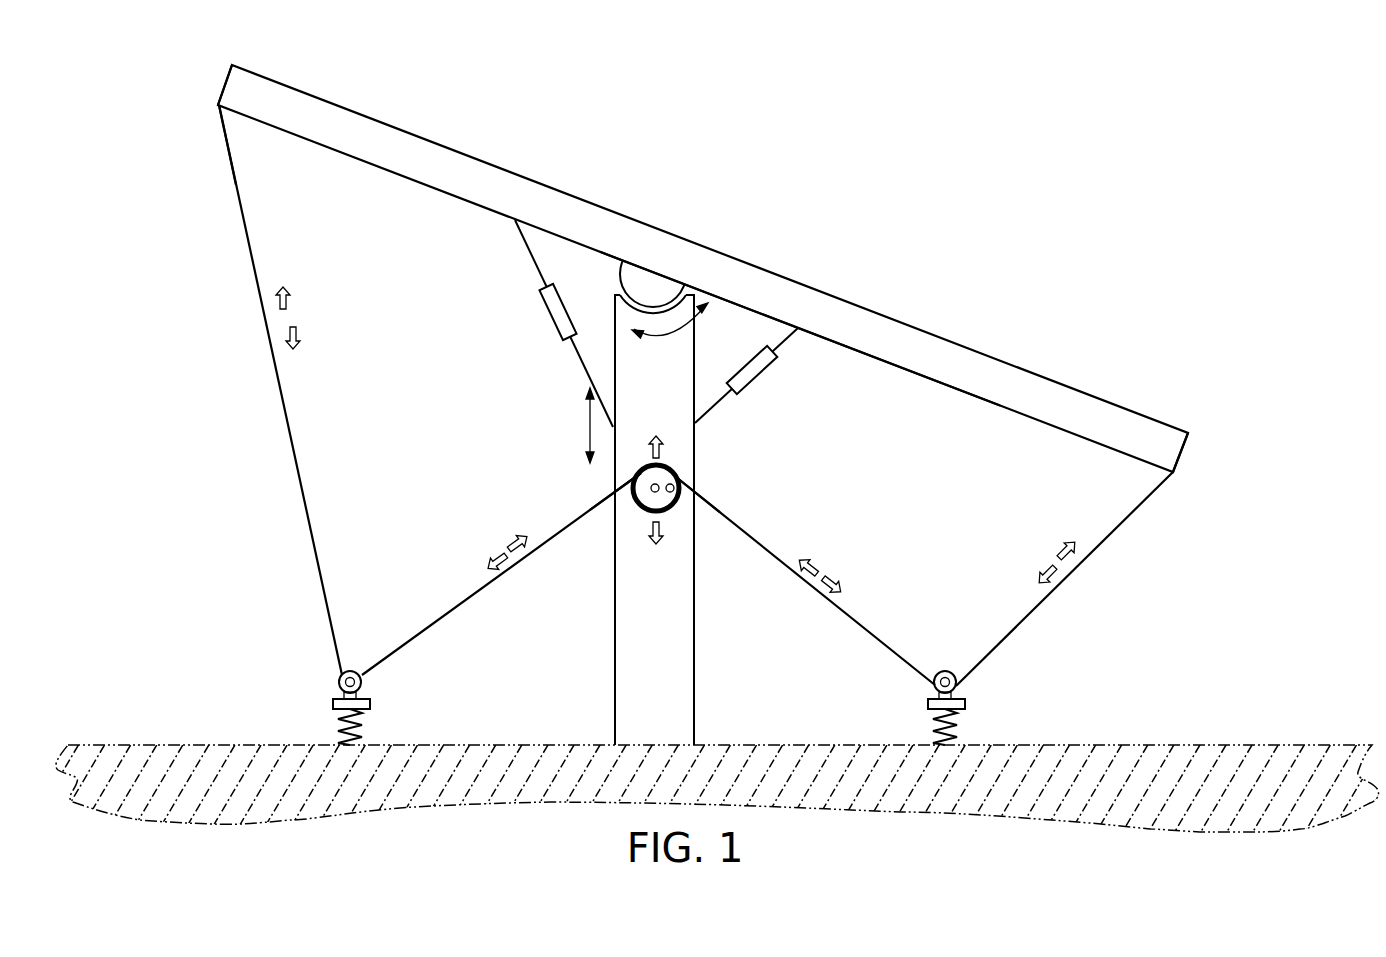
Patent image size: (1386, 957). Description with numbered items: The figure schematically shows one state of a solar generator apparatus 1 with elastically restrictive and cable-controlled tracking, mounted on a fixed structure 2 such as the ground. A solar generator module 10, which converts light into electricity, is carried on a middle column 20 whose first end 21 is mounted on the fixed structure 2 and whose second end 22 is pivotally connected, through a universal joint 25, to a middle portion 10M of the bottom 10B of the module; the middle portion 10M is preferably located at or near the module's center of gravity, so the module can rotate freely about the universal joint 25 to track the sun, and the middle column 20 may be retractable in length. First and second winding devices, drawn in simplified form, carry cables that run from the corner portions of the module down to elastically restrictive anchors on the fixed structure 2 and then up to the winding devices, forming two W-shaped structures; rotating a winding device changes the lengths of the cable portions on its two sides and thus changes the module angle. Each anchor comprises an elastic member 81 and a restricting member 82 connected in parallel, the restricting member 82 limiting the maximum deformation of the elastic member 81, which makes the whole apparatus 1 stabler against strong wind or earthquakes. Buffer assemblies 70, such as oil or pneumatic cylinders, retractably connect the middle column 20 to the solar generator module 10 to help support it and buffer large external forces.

The solar generator apparatus 1 is at (1048, 170).
The fixed structure 2 is at (1166, 745).
The solar generator module 10 is at (703, 268).
The middle portion 10M is at (655, 273).
The bottom 10B is at (890, 364).
The middle column 20 is at (710, 520).
The first end 21 is at (630, 730).
The second end 22 is at (622, 312).
The universal joint 25 is at (633, 280).
The buffer assembly 70 is at (640, 327).
The elastic member 81 is at (340, 720).
The restricting member 82 is at (362, 717).